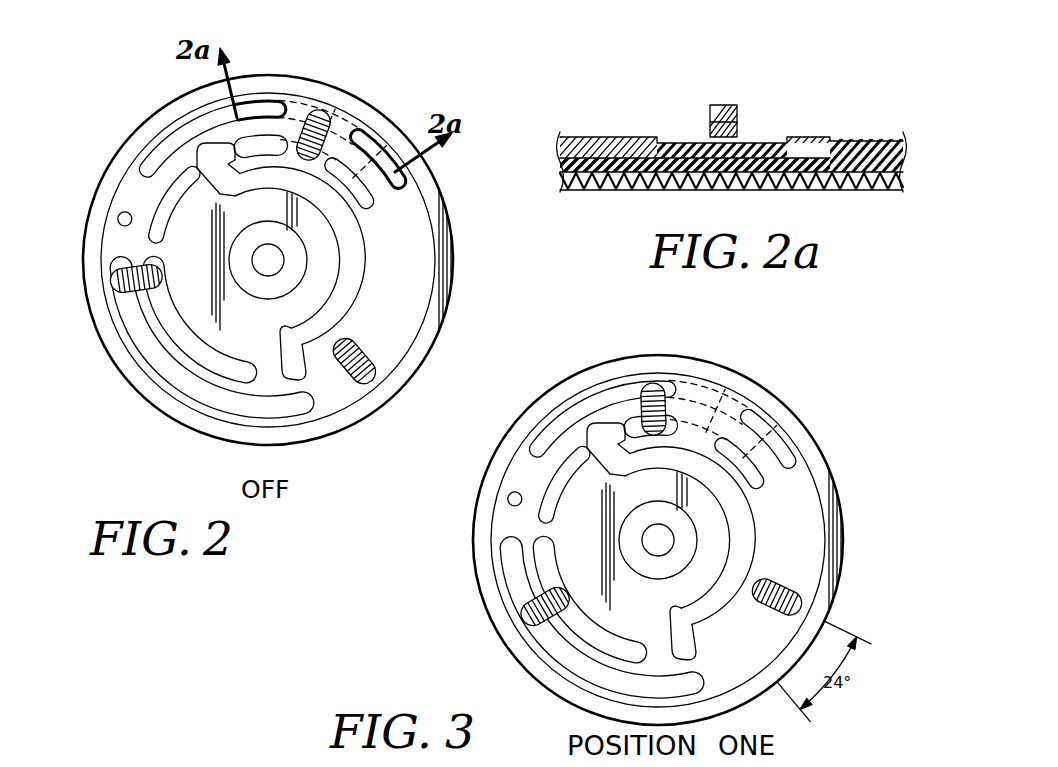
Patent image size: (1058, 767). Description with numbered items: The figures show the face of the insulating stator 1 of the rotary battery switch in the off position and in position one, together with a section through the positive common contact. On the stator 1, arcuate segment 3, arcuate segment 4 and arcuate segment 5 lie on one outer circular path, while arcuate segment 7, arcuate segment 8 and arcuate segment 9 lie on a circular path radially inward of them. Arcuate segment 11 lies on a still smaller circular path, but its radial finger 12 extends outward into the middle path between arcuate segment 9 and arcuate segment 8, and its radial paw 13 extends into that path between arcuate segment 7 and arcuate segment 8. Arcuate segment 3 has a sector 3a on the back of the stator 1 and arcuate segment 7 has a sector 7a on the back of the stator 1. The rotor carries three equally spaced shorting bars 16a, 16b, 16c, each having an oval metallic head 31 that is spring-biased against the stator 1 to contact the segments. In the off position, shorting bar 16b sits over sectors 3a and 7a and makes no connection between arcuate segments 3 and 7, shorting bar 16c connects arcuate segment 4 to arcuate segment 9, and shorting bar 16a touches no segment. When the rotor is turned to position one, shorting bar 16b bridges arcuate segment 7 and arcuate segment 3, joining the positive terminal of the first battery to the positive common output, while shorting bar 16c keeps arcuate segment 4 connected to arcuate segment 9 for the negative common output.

In FIG. 2, the stator 1 is at (268, 260).
In FIG. 3, the stator 1 is at (658, 540).
In FIG. 2, the arcuate segment 3 is at (212, 128).
In FIG. 2a, the arcuate segment 3 is at (632, 140).
In FIG. 3, the arcuate segment 3 is at (602, 396).
In FIG. 2a, the sector 3a is at (722, 173).
In FIG. 3, the sector 3a is at (722, 396).
In FIG. 2, the arcuate segment 4 is at (197, 337).
In FIG. 3, the arcuate segment 4 is at (602, 630).
In FIG. 2, the arcuate segment 5 is at (90, 213).
In FIG. 3, the arcuate segment 5 is at (481, 492).
In FIG. 2, the arcuate segment 7 is at (353, 194).
In FIG. 3, the arcuate segment 7 is at (748, 474).
In FIG. 3, the sector 7a is at (765, 412).
In FIG. 2, the arcuate segment 8 is at (174, 209).
In FIG. 3, the arcuate segment 8 is at (564, 494).
In FIG. 2, the arcuate segment 9 is at (199, 319).
In FIG. 3, the arcuate segment 9 is at (589, 599).
In FIG. 2, the arcuate segment 11 is at (311, 256).
In FIG. 3, the arcuate segment 11 is at (691, 536).
In FIG. 2, the radial finger 12 is at (271, 352).
In FIG. 3, the radial finger 12 is at (709, 634).
In FIG. 2, the radial paw 13 is at (214, 180).
In FIG. 3, the radial paw 13 is at (605, 463).
In FIG. 2, the shorting bar 16a is at (352, 366).
In FIG. 3, the shorting bar 16a is at (775, 590).
In FIG. 2, the shorting bar 16b is at (318, 128).
In FIG. 3, the shorting bar 16b is at (650, 393).
In FIG. 2, the shorting bar 16c is at (133, 289).
In FIG. 3, the shorting bar 16c is at (528, 612).
In FIG. 2a, the metallic head 31 is at (712, 108).